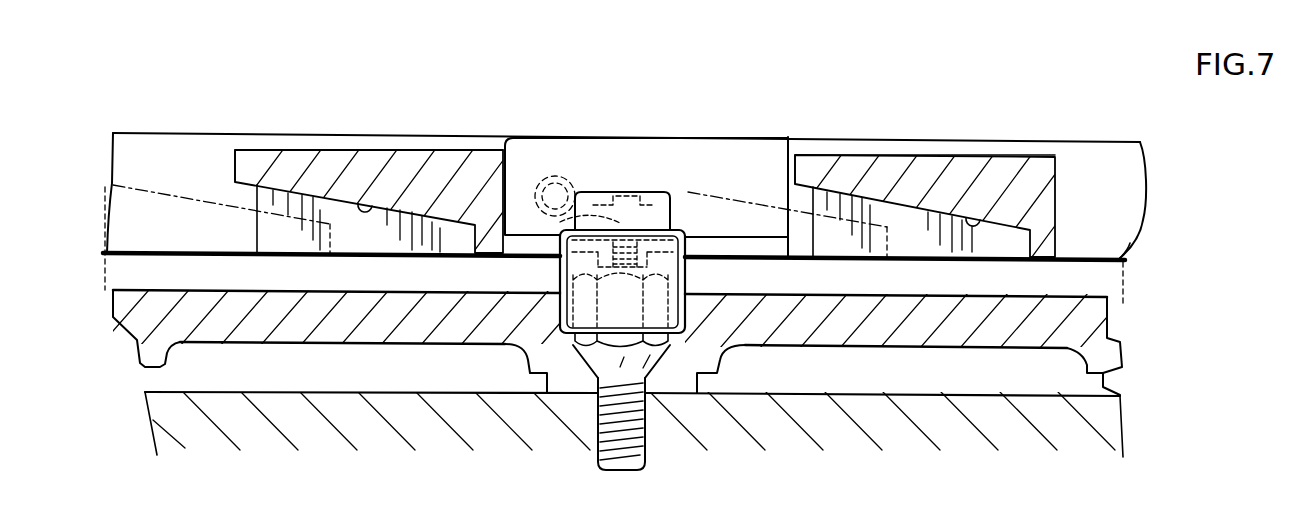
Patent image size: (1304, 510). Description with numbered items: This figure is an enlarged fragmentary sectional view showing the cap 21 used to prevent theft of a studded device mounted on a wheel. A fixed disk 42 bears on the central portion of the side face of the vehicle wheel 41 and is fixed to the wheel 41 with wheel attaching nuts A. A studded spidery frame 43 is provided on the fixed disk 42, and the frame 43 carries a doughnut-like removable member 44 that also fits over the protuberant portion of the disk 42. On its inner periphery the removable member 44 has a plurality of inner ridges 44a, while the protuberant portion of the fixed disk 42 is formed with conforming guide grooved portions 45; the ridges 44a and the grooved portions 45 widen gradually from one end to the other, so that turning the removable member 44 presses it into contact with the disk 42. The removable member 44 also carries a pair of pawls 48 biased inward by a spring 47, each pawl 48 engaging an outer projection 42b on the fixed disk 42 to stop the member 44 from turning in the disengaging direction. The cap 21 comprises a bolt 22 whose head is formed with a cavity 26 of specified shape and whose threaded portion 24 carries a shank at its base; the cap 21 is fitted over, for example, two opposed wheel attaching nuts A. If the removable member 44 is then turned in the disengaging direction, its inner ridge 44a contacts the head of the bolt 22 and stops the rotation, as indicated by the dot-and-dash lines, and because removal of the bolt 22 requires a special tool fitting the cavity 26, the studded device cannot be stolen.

The cap 21 is at (717, 347).
The bolt 22 is at (580, 190).
The threaded portion 24 is at (562, 225).
The cavity 26 is at (640, 193).
The vehicle wheel 41 is at (1006, 394).
The fixed disk 42 is at (1043, 240).
The outer projection 42b is at (488, 165).
The studded spidery frame 43 is at (1145, 237).
The removable member 44 is at (1120, 140).
The inner ridges 44a is at (143, 187).
The guide grooved portion 45 is at (367, 203).
The spring 47 is at (538, 175).
The pawl 48 is at (673, 153).
The wheel attaching nuts A is at (655, 345).